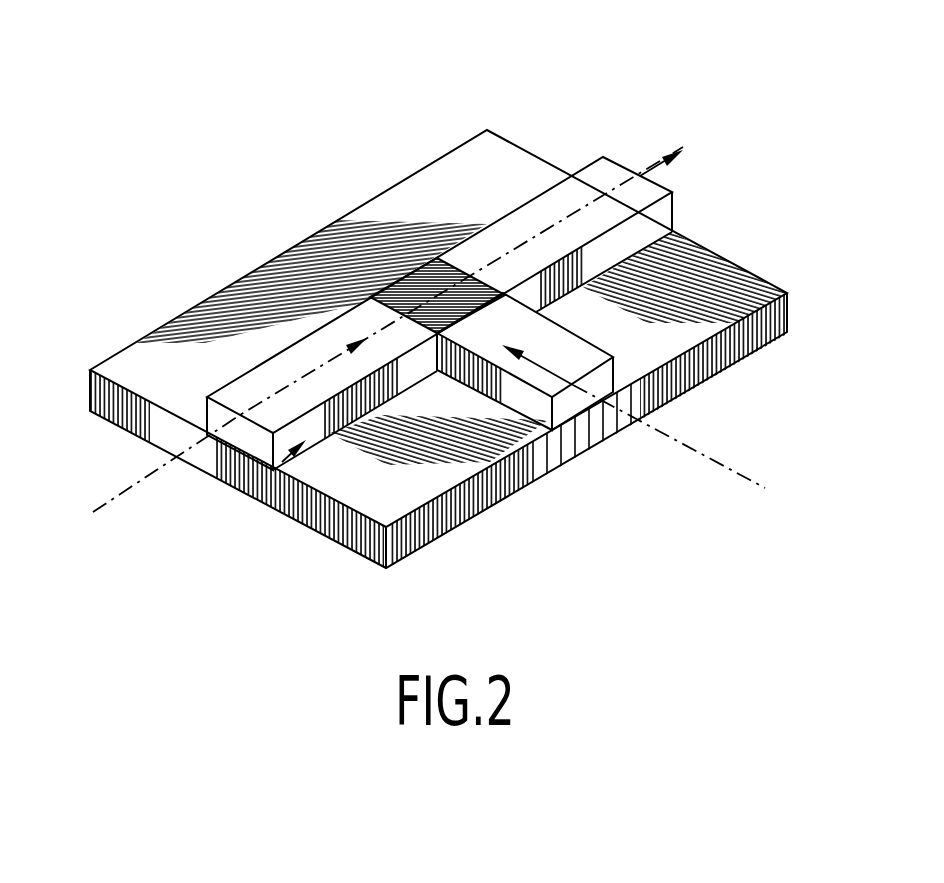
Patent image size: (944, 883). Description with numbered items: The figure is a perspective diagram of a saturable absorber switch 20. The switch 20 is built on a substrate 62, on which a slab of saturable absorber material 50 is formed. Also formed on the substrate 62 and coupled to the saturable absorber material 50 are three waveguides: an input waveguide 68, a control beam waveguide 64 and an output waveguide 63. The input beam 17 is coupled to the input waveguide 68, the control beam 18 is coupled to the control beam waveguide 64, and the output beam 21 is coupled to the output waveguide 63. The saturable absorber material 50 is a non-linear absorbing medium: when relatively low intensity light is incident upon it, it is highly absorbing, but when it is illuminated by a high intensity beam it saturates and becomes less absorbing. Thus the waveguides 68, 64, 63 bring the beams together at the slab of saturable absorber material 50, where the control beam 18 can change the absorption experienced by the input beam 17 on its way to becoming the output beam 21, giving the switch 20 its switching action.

The switch 20 is at (605, 112).
The saturable absorber material 50 is at (428, 284).
The output beam 21 is at (680, 152).
The substrate 62 is at (279, 282).
The output waveguide 63 is at (660, 223).
The input beam 17 is at (369, 346).
The control beam 18 is at (650, 432).
The input waveguide 68 is at (269, 463).
The control beam waveguide 64 is at (523, 402).